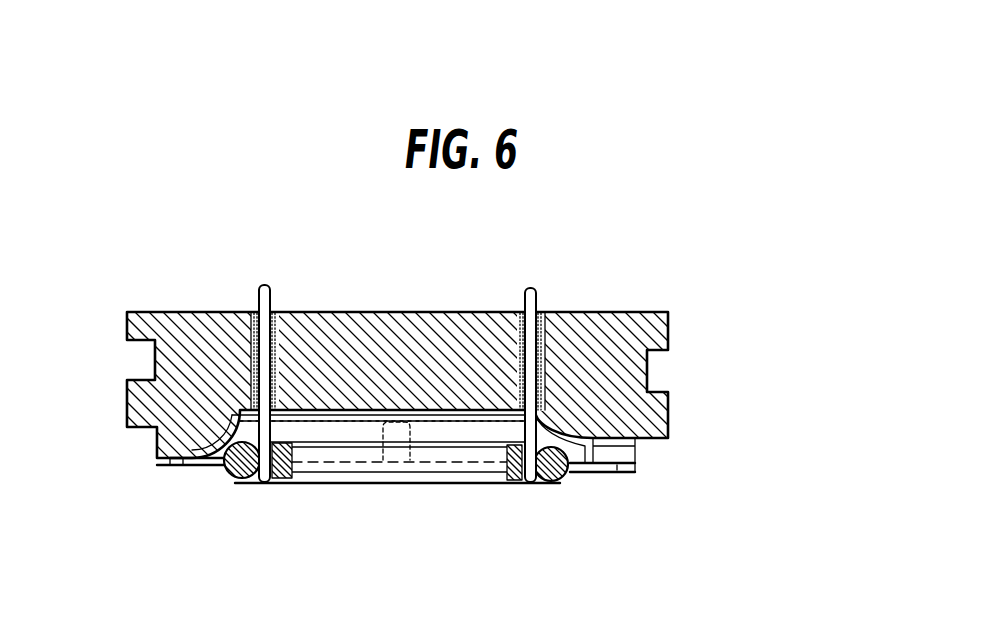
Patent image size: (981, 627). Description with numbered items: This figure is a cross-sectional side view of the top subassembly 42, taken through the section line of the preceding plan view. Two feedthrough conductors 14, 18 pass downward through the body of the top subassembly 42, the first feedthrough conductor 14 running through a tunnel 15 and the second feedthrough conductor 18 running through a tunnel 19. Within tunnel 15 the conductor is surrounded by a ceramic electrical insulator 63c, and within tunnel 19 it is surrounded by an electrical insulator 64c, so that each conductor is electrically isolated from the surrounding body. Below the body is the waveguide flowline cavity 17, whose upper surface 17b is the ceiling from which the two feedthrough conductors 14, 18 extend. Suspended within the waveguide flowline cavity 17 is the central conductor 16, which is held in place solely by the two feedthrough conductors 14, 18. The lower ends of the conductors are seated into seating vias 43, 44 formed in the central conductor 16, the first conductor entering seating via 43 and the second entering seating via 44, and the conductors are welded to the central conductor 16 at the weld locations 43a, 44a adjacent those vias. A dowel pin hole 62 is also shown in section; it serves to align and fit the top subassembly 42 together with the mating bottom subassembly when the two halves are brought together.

The feedthrough conductor 14 is at (535, 288).
The tunnel 15 is at (542, 335).
The central conductor 16 is at (470, 470).
The waveguide flowline cavity 17 is at (229, 423).
The upper surface of the waveguide flowline cavity 17b is at (420, 445).
The feedthrough conductor 18 is at (263, 283).
The tunnel 19 is at (290, 313).
The top subassembly 42 is at (681, 342).
The seating via 43 is at (550, 488).
The weld location 43a is at (525, 488).
The seating via 44 is at (280, 485).
The weld location 44a is at (253, 487).
The dowel pin hole 62 is at (390, 425).
The ceramic electrical insulator 63c is at (521, 345).
The electrical insulator 64c is at (276, 357).